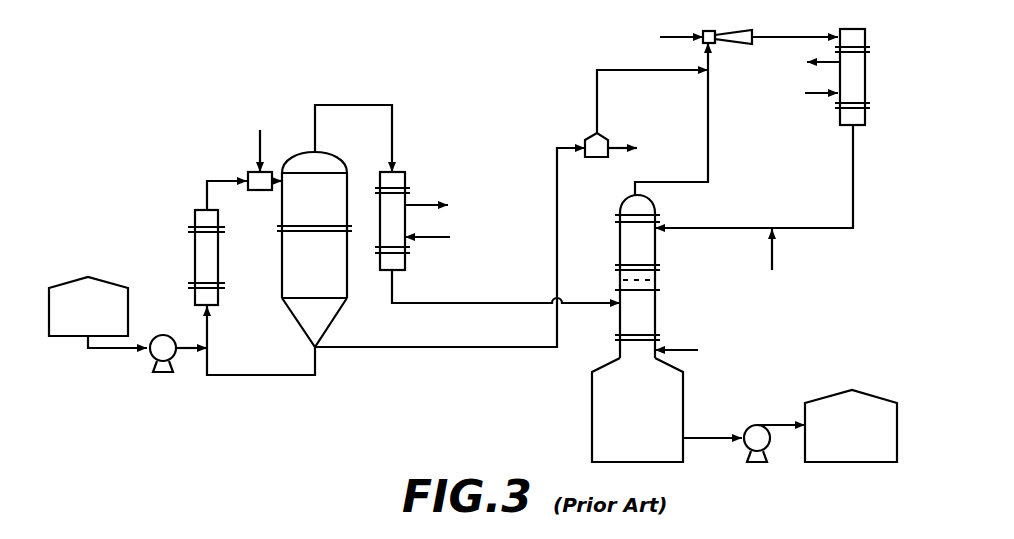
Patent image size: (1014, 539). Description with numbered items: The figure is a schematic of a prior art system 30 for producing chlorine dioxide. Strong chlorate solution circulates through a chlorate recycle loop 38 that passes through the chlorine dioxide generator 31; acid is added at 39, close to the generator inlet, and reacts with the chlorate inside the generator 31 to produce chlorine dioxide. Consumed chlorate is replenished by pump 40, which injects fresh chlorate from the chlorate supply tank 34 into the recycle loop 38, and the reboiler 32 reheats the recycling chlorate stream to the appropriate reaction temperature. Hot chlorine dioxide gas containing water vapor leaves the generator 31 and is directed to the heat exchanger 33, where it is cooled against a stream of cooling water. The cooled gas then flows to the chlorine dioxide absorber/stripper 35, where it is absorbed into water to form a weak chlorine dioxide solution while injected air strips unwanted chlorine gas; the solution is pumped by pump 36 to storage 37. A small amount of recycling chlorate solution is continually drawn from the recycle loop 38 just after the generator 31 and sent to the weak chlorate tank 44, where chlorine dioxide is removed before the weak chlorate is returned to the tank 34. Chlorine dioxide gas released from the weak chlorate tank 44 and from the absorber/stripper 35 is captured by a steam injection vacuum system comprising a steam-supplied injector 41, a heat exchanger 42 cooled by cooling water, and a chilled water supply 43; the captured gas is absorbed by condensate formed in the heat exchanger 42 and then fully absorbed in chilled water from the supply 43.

The prior art system 30 is at (191, 49).
The chlorine dioxide generator 31 is at (331, 158).
The reboiler 32 is at (199, 217).
The heat exchanger 33 is at (405, 178).
The chlorate supply tank 34 is at (85, 282).
The chlorine dioxide absorber/stripper 35 is at (598, 397).
The pump 36 is at (757, 424).
The storage 37 is at (838, 397).
The chlorate recycle loop 38 is at (270, 376).
The acid addition point 39 is at (250, 172).
The pump 40 is at (163, 373).
The injector 41 is at (712, 30).
The heat exchanger 42 is at (862, 35).
The chilled water supply 43 is at (773, 258).
The weak chlorate tank 44 is at (590, 135).